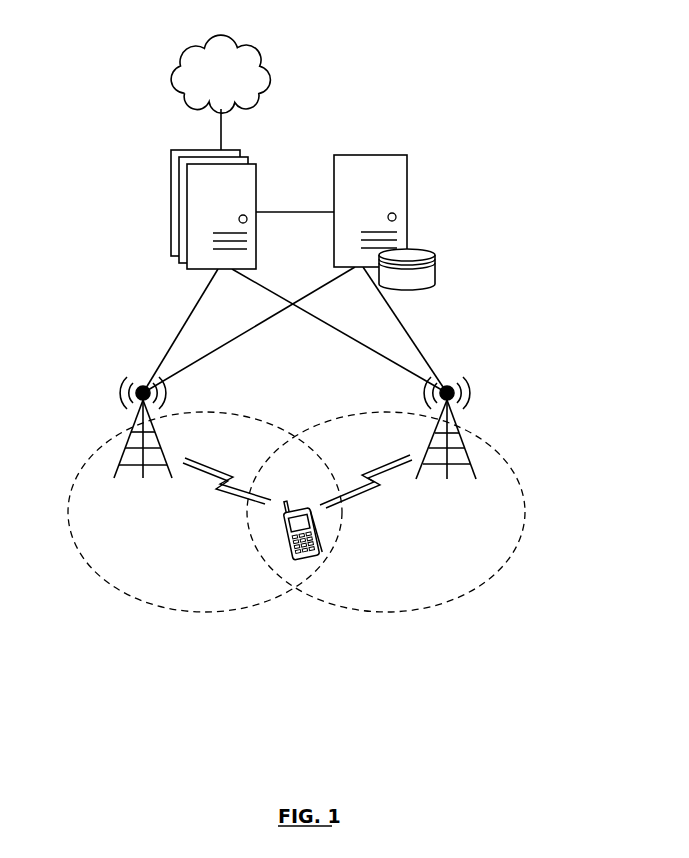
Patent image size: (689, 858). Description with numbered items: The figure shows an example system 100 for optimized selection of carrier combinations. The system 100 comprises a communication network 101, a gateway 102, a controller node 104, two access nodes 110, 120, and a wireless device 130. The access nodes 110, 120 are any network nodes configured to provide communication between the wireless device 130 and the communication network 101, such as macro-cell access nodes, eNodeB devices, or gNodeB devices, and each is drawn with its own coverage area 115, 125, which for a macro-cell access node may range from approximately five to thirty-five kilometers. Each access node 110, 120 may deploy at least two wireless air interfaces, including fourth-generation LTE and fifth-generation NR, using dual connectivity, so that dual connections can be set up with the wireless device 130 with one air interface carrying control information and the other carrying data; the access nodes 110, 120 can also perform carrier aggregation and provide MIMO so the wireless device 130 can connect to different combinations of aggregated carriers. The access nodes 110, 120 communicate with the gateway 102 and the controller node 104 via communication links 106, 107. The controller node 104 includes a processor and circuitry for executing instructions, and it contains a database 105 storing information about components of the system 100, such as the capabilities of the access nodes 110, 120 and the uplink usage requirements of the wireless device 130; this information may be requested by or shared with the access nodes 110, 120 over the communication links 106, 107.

The system 100 is at (354, 48).
The communication network 101 is at (206, 86).
The gateway 102 is at (172, 182).
The controller node 104 is at (408, 200).
The database 105 is at (437, 272).
The communication link 106 is at (276, 295).
The communication link 107 is at (245, 333).
The access node 110 is at (125, 453).
The coverage area 115 is at (137, 598).
The access node 120 is at (465, 456).
The coverage area 125 is at (458, 598).
The wireless device 130 is at (287, 545).